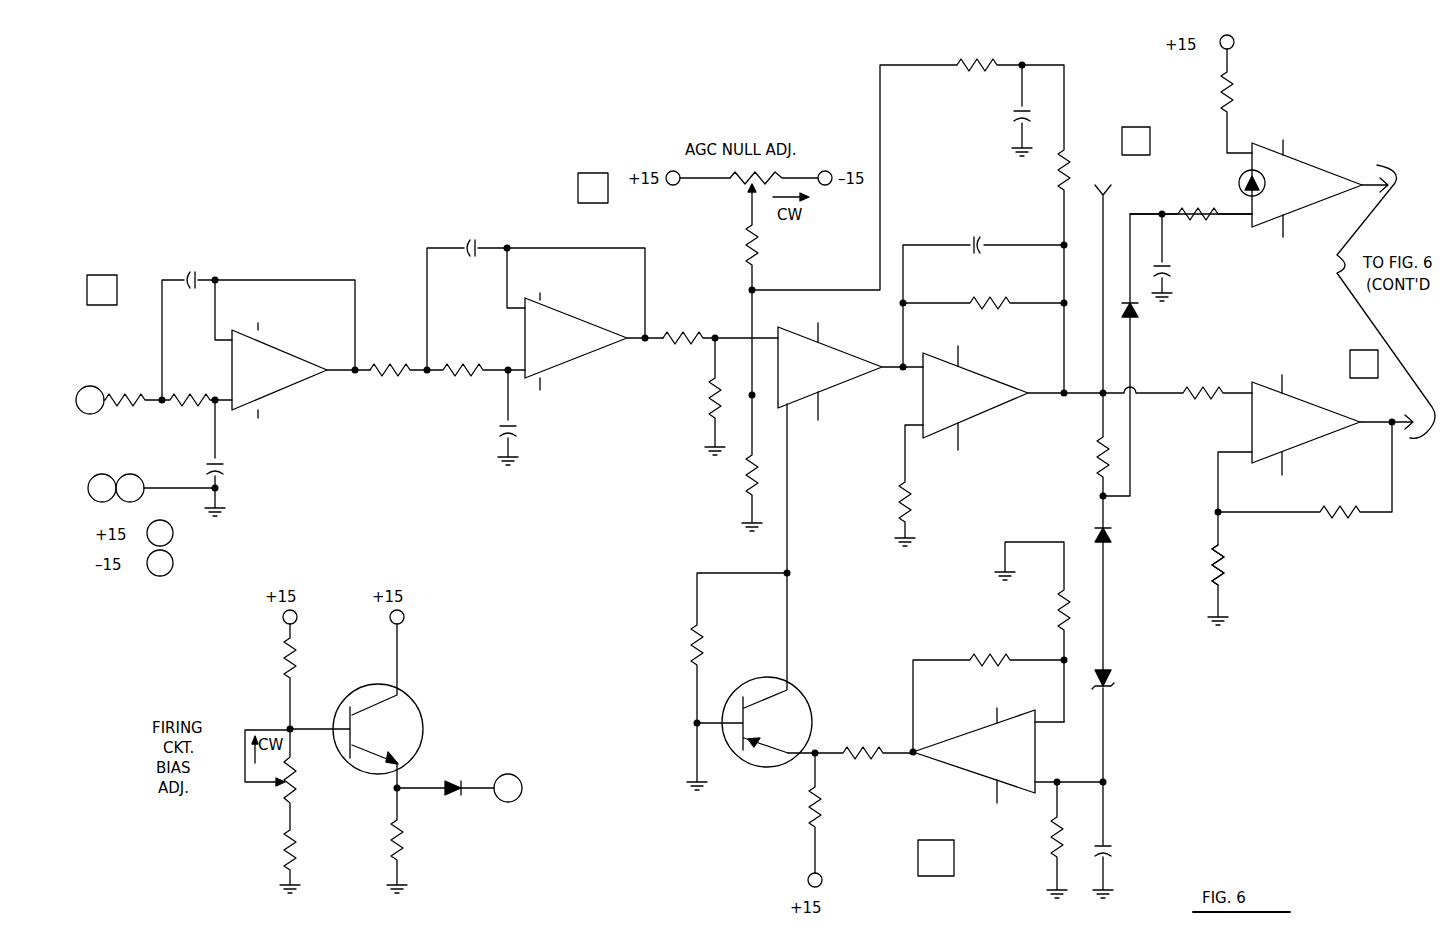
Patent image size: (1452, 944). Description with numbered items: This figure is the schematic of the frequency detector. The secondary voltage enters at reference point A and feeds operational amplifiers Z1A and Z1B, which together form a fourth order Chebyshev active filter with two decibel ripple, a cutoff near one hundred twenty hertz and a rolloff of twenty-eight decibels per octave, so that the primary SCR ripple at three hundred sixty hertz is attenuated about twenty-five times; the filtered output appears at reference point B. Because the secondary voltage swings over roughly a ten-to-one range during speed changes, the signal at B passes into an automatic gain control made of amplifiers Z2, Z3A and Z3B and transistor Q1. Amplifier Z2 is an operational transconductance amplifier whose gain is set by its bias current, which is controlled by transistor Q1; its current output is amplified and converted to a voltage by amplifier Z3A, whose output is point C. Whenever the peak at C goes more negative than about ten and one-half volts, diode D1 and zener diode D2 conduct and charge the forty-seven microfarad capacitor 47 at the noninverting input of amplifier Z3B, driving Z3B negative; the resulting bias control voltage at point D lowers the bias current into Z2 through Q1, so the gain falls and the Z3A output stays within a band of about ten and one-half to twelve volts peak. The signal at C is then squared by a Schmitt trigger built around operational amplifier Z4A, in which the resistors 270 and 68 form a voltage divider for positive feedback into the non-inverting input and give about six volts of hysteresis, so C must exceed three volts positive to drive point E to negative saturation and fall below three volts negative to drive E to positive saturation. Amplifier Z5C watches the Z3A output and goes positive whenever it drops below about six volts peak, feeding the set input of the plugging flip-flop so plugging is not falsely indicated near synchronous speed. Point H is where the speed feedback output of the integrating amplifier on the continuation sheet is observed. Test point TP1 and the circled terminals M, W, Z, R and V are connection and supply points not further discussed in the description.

The reference point A is at (102, 305).
The reference point B is at (608, 203).
The point C is at (1136, 155).
The point D is at (928, 840).
The point E is at (1370, 378).
The input connector M is at (90, 400).
The connector W is at (102, 488).
The connector Z is at (130, 488).
The +15 V supply connector R is at (160, 533).
The -15 V supply connector V is at (160, 563).
The point H is at (508, 788).
The operational amplifier Z1A is at (279, 371).
The operational amplifier Z1B is at (574, 345).
The operational transconductance amplifier Z2 is at (830, 371).
The amplifier Z3A is at (975, 397).
The amplifier Z3B is at (974, 756).
The operational amplifier Z4A is at (1306, 426).
The amplifier Z5C is at (1300, 188).
The transistor Q1 is at (765, 677).
The diode D1 is at (1119, 538).
The zener diode D2 is at (1119, 679).
The test point TP1 is at (1082, 170).
The 47 microfarad capacitor 47 is at (1113, 855).
The 68K resistor 68 is at (1224, 567).
The 270K resistor 270 is at (1345, 518).